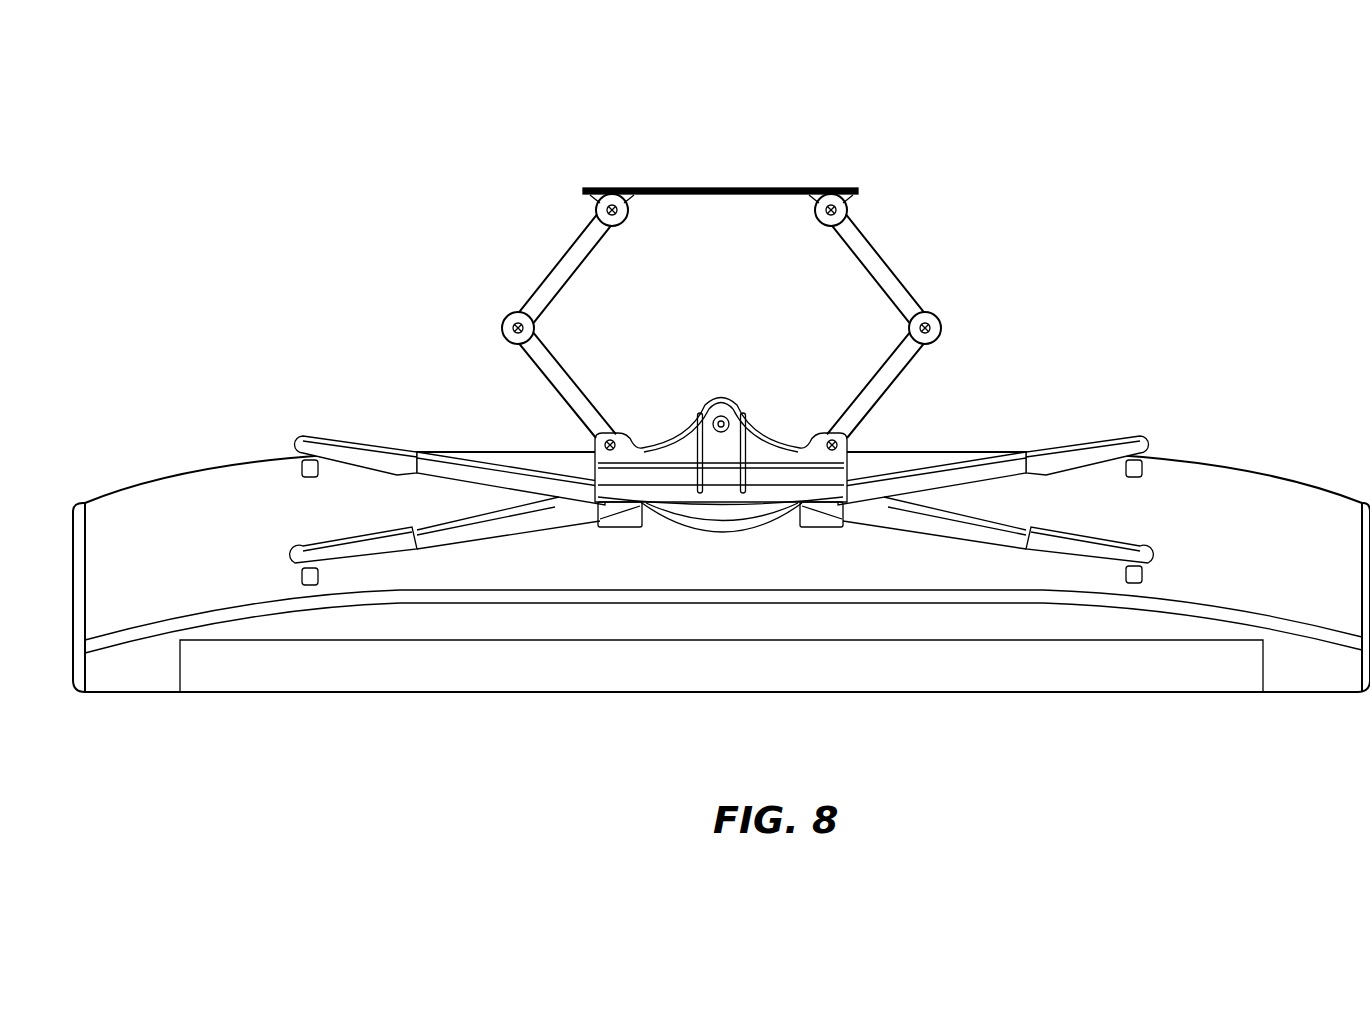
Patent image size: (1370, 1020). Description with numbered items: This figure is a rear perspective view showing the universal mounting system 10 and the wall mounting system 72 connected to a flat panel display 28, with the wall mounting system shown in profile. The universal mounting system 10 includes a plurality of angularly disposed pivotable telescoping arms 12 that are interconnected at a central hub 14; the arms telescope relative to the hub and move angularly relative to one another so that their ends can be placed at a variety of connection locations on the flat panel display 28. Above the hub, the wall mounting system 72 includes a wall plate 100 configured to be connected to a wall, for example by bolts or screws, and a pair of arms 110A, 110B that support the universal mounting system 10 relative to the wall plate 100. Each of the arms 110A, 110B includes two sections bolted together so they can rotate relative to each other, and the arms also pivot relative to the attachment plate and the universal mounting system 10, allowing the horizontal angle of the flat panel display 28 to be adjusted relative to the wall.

The universal mounting system 10 is at (780, 331).
The pivotable telescoping arms 12 is at (955, 467).
The central hub 14 is at (622, 487).
The flat panel display 28 is at (1225, 500).
The wall mounting system 72 is at (710, 257).
The wall plate 100 is at (742, 188).
The arm 110A is at (545, 265).
The arm 110B is at (893, 270).